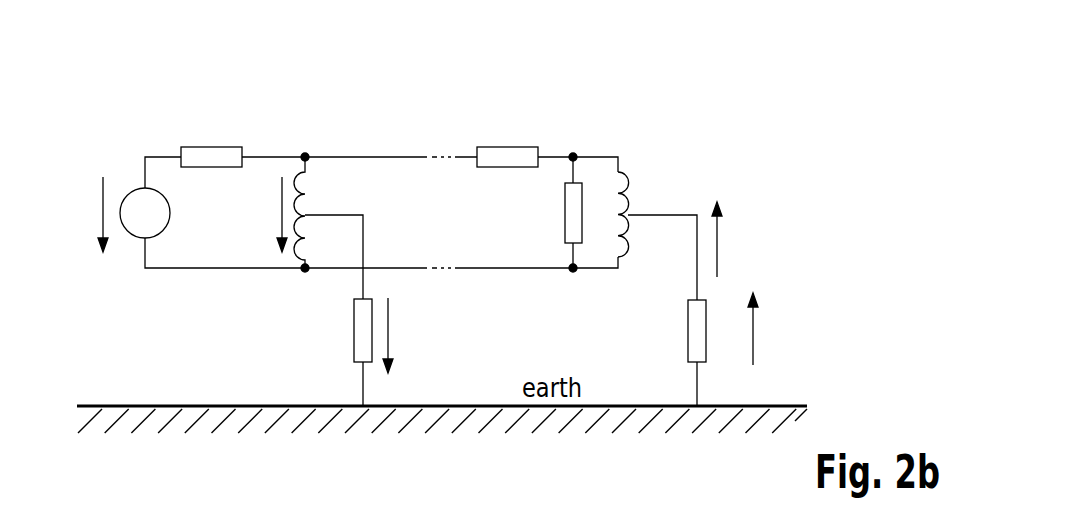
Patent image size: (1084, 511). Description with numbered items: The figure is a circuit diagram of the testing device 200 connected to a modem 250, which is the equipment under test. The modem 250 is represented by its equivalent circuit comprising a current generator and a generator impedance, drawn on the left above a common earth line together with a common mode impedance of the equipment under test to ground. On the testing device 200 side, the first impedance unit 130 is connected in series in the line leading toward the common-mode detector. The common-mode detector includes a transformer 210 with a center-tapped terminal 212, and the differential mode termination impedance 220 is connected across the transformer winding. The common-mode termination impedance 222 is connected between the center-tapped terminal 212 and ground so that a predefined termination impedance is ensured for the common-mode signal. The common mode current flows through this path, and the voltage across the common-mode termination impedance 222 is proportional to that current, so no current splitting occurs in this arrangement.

The modem 250 is at (75, 79).
The testing device 200 is at (777, 79).
The first impedance unit 130 is at (510, 147).
The transformer 210 is at (622, 172).
The center-tapped terminal 212 is at (633, 209).
The differential mode termination impedance 220 is at (565, 237).
The common-mode termination impedance 222 is at (688, 332).